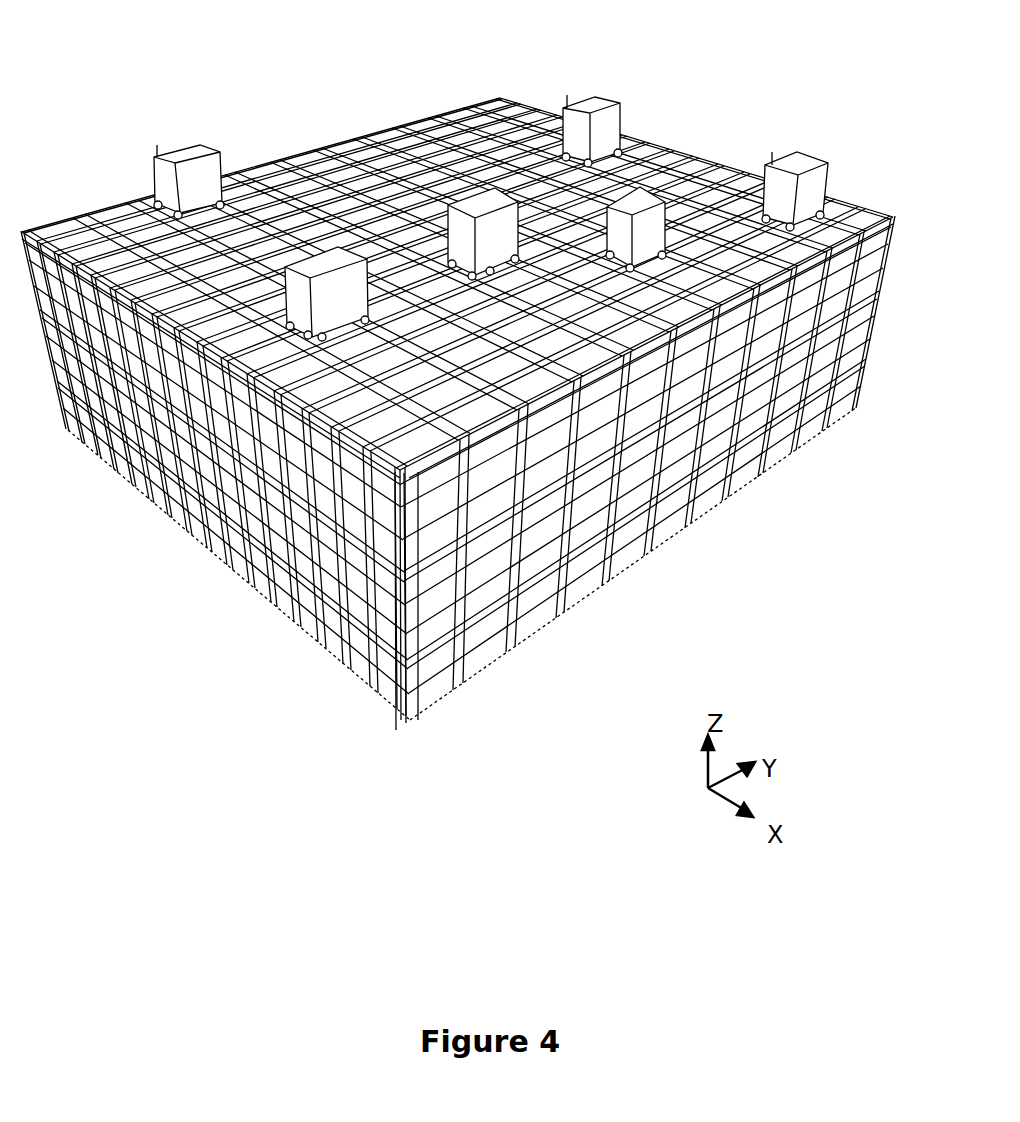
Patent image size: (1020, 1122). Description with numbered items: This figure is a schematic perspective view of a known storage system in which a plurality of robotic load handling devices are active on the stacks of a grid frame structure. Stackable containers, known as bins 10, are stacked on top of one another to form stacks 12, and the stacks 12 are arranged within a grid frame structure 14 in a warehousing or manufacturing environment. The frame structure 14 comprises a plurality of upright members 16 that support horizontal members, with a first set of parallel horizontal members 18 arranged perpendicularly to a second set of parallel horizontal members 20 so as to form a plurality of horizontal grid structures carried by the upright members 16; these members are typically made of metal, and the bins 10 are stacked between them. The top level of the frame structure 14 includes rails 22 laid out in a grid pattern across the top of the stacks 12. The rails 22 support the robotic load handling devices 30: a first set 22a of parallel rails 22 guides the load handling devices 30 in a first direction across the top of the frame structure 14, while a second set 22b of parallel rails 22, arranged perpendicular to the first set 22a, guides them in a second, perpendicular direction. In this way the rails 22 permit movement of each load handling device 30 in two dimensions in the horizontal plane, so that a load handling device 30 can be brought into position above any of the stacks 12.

The bin 10 is at (433, 602).
The stack 12 is at (743, 468).
The grid frame structure 14 is at (860, 203).
The upright member 16 is at (330, 598).
The first set of parallel horizontal members 18 is at (550, 512).
The second set of parallel horizontal members 20 is at (248, 480).
The rails 22 is at (457, 263).
The first set of parallel rails 22a is at (250, 340).
The second set of parallel rails 22b is at (325, 217).
The robotic load handling device 30 is at (612, 125).